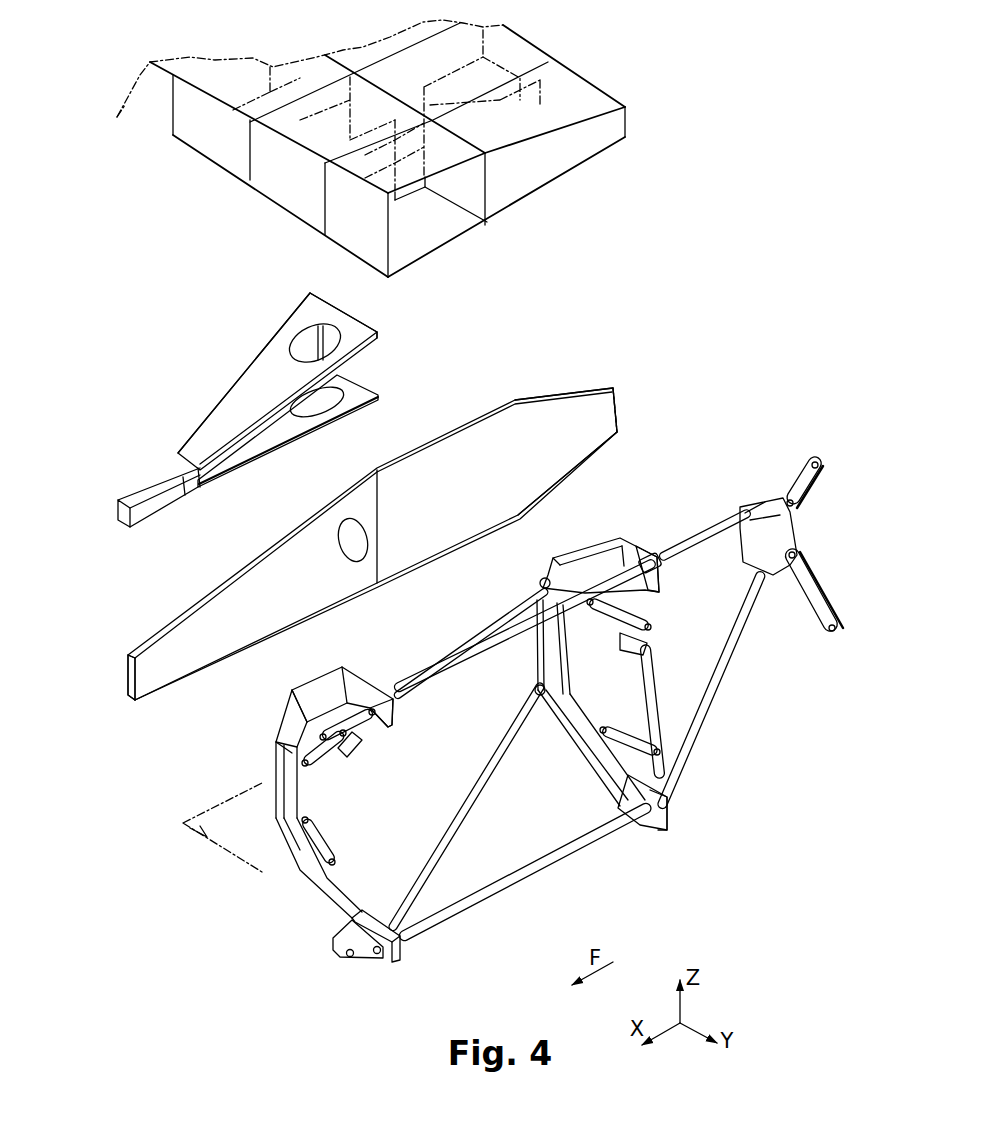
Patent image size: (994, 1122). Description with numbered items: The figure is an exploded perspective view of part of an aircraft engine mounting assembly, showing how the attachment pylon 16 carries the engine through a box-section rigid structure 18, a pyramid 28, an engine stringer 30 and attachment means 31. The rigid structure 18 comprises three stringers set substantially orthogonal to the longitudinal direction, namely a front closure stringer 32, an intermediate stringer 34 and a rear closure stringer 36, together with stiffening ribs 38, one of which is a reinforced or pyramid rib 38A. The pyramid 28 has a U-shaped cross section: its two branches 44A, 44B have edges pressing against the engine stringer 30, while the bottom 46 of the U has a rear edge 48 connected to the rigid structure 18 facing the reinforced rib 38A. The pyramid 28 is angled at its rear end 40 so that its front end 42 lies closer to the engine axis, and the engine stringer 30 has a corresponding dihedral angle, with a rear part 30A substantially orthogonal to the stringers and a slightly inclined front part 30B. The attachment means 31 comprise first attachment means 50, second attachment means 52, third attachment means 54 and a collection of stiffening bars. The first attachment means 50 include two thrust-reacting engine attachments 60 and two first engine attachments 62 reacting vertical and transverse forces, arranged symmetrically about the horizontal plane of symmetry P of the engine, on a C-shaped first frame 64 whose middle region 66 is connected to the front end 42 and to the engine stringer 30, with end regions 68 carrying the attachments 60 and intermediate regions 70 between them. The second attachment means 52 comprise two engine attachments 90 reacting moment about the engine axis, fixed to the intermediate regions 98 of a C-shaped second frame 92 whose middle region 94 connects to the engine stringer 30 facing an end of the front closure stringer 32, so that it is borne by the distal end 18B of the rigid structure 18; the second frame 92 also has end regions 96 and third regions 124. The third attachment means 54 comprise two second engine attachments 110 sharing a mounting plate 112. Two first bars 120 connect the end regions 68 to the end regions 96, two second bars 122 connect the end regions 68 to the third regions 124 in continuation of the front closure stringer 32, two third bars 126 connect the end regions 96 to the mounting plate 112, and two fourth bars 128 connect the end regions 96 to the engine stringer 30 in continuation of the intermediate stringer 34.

The attachment pylon 16 is at (401, 138).
The box-section rigid structure 18 is at (205, 188).
The pyramid 28 is at (182, 413).
The engine stringer 30 is at (608, 450).
The rear part of the engine stringer 30A is at (556, 434).
The front part of the engine stringer 30B is at (170, 660).
The distal end of the rigid structure 18B is at (527, 428).
The attachment means 31 is at (180, 797).
The front closure stringer 32 is at (290, 178).
The intermediate stringer 34 is at (300, 72).
The rear closure stringer 36 is at (628, 118).
The stiffening ribs 38 is at (405, 70).
The reinforced rib 38A is at (545, 77).
The rear end of the pyramid 40 is at (353, 315).
The front end of the pyramid 42 is at (120, 493).
The branch of the U 44A is at (273, 430).
The branch of the U 44B is at (253, 397).
The bottom of the U 46 is at (283, 313).
The rear edge 48 is at (315, 288).
The first attachment means 50 is at (420, 965).
The second attachment means 52 is at (683, 832).
The third attachment means 54 is at (822, 452).
The engine attachments for reacting thrust force 60 is at (350, 760).
The first engine attachments 62 is at (347, 833).
The first frame 64 is at (310, 898).
The middle region of the first frame 66 is at (285, 760).
The end regions of the first frame 68 is at (355, 693).
The intermediate regions of the first frame 70 is at (317, 690).
The engine attachments for reacting moment 90 is at (603, 630).
The second frame 92 is at (560, 743).
The middle region of the second frame 94 is at (538, 650).
The end regions of the second frame 96 is at (635, 557).
The intermediate regions of the second frame 98 is at (593, 563).
The second engine attachments 110 is at (840, 593).
The mounting plate 112 is at (747, 550).
The first bars 120 is at (465, 658).
The second bars 122 is at (523, 600).
The third regions of the second frame 124 is at (543, 580).
The third bars 126 is at (725, 530).
The fourth bars 128 is at (680, 700).
The horizontal plane of symmetry of the engine P is at (207, 837).